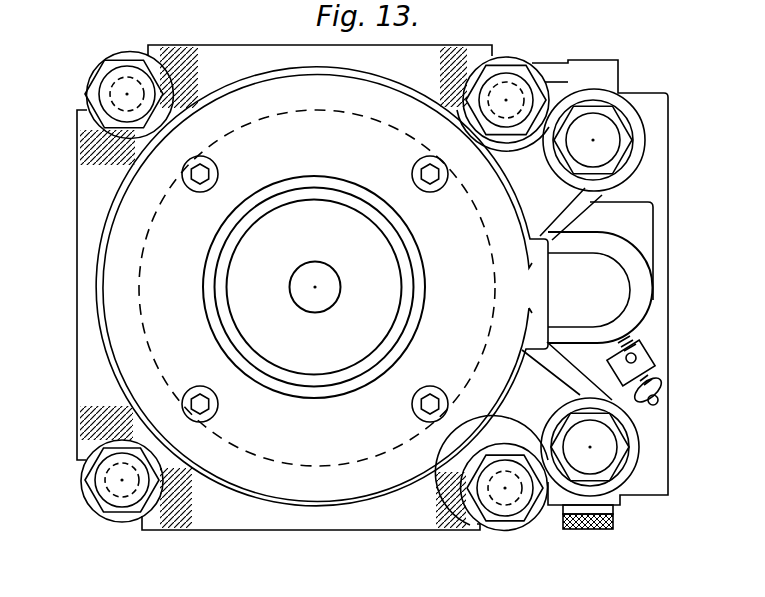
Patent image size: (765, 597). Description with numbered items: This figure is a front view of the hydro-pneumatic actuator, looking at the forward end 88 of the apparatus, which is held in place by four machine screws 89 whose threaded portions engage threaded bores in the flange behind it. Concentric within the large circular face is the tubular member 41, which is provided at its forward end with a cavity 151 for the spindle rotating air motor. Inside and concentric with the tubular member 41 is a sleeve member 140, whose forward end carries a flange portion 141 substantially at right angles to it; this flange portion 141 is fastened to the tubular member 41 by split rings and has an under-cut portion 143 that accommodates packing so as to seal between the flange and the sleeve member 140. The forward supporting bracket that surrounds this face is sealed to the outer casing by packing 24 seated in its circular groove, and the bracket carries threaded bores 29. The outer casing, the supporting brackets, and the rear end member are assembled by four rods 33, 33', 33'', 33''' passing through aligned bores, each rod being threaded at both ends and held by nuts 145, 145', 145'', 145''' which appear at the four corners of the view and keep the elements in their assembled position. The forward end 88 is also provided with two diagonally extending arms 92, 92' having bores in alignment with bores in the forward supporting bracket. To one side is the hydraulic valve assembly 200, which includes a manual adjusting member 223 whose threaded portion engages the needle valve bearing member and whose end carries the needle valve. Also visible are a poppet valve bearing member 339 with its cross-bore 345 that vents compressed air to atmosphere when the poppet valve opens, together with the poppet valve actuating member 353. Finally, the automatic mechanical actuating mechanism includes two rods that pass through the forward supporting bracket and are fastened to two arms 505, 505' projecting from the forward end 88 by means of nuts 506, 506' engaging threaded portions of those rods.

The packing 24 is at (77, 307).
The threaded bores 29 is at (186, 46).
The rod 33 is at (508, 503).
The rod 33' is at (531, 87).
The rod 33'' is at (115, 87).
The rod 33''' is at (95, 481).
The tubular member 41 is at (218, 337).
The forward end 88 is at (335, 498).
The machine screws 89 is at (412, 172).
The diagonally extending arm 92 is at (600, 272).
The diagonally extending arm 92' is at (589, 306).
The sleeve member 140 is at (320, 267).
The flange portion 141 is at (374, 330).
The under-cut portion 143 is at (270, 372).
The nut 145 is at (499, 71).
The nut 145' is at (127, 64).
The nut 145'' is at (99, 499).
The nut 145''' is at (493, 524).
The cavity 151 is at (278, 190).
The hydraulic valve assembly 200 is at (696, 306).
The manual adjusting member 223 is at (613, 528).
The poppet valve bearing member 339 is at (650, 366).
The cross-bore 345 is at (638, 357).
The actuating member 353 is at (657, 392).
The arm 505 is at (632, 447).
The arm 505' is at (642, 145).
The nut 506 is at (637, 449).
The nut 506' is at (642, 140).